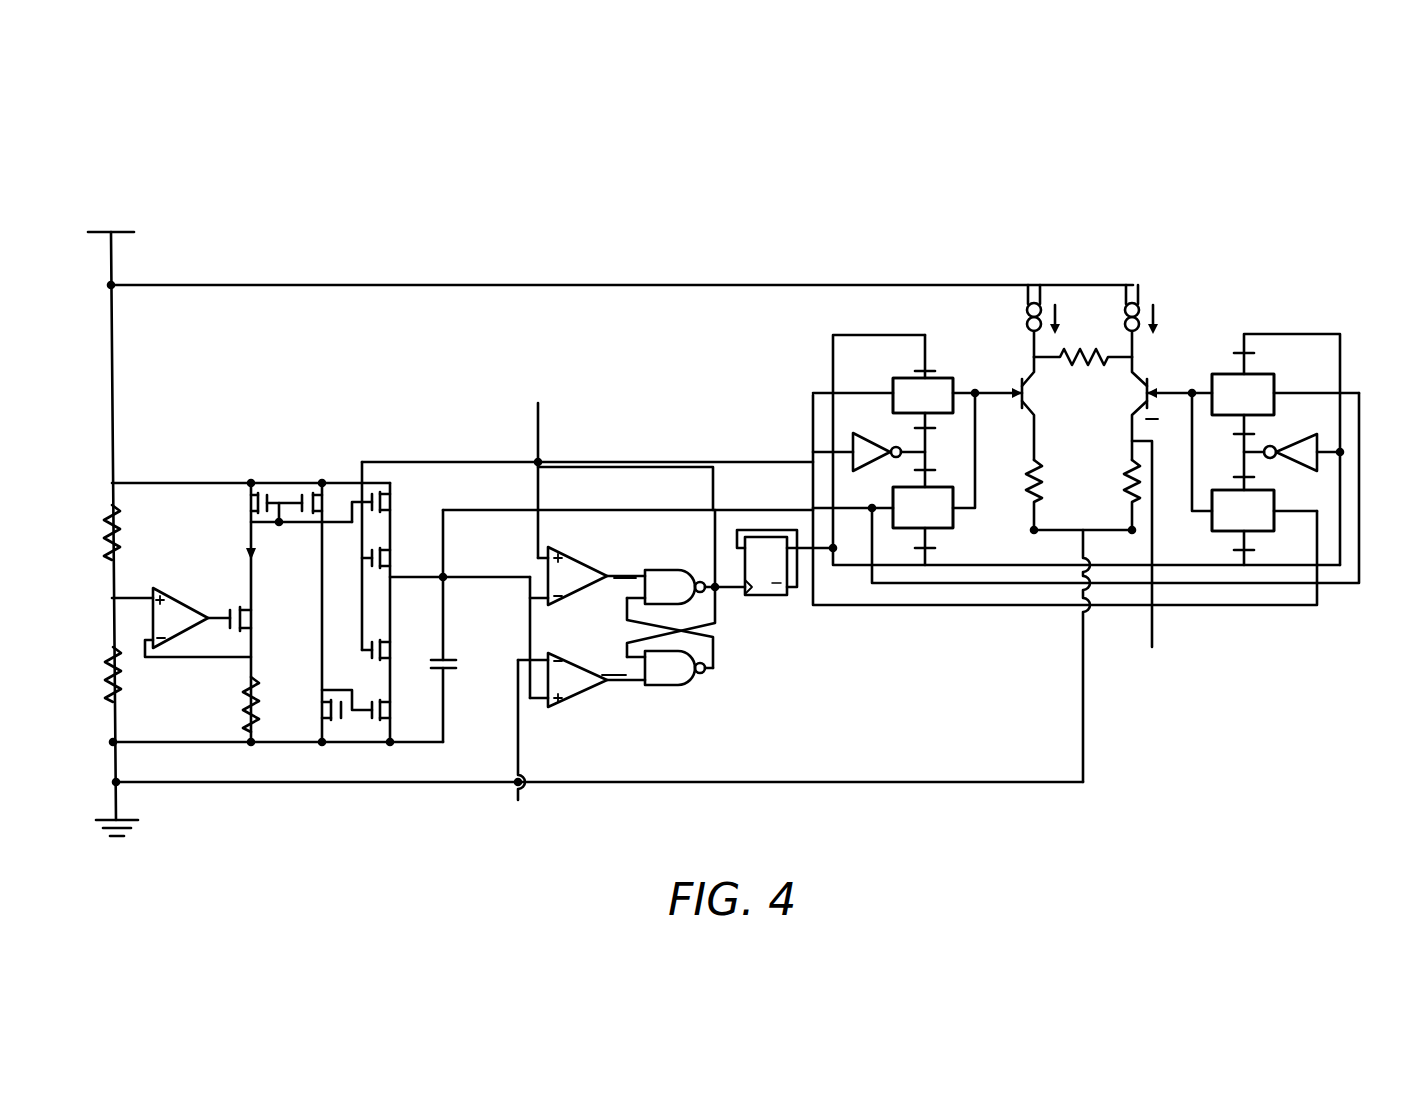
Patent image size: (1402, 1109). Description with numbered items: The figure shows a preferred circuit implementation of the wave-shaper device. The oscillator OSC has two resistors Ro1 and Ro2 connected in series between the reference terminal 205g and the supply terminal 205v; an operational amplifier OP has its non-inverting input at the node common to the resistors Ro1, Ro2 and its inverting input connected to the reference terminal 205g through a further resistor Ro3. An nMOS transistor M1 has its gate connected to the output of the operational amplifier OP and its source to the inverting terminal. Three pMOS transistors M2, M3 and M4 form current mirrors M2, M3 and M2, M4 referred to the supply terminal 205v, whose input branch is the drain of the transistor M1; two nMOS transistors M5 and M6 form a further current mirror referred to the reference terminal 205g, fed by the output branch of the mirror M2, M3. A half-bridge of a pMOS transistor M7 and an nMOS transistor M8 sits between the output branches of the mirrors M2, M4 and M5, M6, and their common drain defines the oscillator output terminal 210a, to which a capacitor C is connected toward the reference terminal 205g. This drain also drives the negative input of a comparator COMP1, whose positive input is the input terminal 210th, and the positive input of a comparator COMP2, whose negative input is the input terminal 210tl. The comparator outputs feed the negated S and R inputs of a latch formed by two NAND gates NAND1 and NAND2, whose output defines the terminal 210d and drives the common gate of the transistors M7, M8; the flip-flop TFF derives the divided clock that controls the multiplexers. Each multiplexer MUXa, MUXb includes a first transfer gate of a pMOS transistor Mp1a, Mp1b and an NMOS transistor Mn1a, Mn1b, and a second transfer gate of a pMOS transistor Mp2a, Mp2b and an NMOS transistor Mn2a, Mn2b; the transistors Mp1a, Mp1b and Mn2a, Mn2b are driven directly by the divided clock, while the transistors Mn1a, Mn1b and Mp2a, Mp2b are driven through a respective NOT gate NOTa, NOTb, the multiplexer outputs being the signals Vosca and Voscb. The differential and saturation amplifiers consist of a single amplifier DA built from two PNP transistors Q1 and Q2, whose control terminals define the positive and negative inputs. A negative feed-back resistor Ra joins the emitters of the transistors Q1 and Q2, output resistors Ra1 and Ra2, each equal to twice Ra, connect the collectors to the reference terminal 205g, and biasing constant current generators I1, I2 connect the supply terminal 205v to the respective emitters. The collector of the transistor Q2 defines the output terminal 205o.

The supply terminal 205v is at (112, 285).
The reference terminal 205g is at (118, 782).
The output terminal 205o is at (1151, 640).
The input terminal 210th is at (538, 452).
The input terminal 210tl is at (520, 786).
The output terminal of the oscillator 210a is at (712, 506).
The output terminal of the latch 210d is at (718, 592).
The oscillator OSC is at (378, 399).
The resistor Ro1 is at (118, 528).
The resistor Ro2 is at (118, 695).
The further resistor Ro3 is at (254, 708).
The operational amplifier OP is at (200, 600).
The nMOS transistor M1 is at (248, 612).
The pMOS transistor M2 is at (252, 496).
The pMOS transistor M3 is at (318, 482).
The pMOS transistor M4 is at (392, 498).
The nMOS transistor M5 is at (328, 716).
The nMOS transistor M6 is at (404, 708).
The pMOS transistor M7 is at (406, 556).
The nMOS transistor M8 is at (392, 654).
The capacitor C is at (456, 668).
The comparator COMP1 is at (592, 546).
The comparator COMP2 is at (582, 700).
The NAND logical gate NAND1 is at (706, 630).
The NAND logical gate NAND2 is at (700, 686).
The toggle flip-flop TFF is at (797, 593).
The multiplexer MUXa is at (806, 390).
The multiplexer MUXb is at (1300, 318).
The NOT logical gate NOTa is at (832, 446).
The NOT logical gate NOTb is at (1306, 436).
The NMOS transistor Mn1a is at (898, 392).
The pMOS transistor Mp1a is at (966, 360).
The NMOS transistor Mn2a is at (940, 530).
The pMOS transistor Mp2a is at (905, 530).
The NMOS transistor Mn1b is at (1224, 386).
The pMOS transistor Mp1b is at (1295, 378).
The NMOS transistor Mn2b is at (1262, 534).
The pMOS transistor Mp2b is at (1236, 506).
The biasing constant current generator I1 is at (1034, 309).
The biasing constant current generator I2 is at (1135, 309).
The saturation differential amplifier DA is at (1080, 276).
The negative feed-back resistor Ra is at (1088, 346).
The output resistor Ra1 is at (1052, 468).
The output resistor Ra2 is at (1126, 488).
The PNP transistor Q1 is at (1035, 408).
The PNP transistor Q2 is at (1130, 408).
The oscillation signal a Vosca is at (997, 395).
The oscillation signal b Voscb is at (1166, 392).